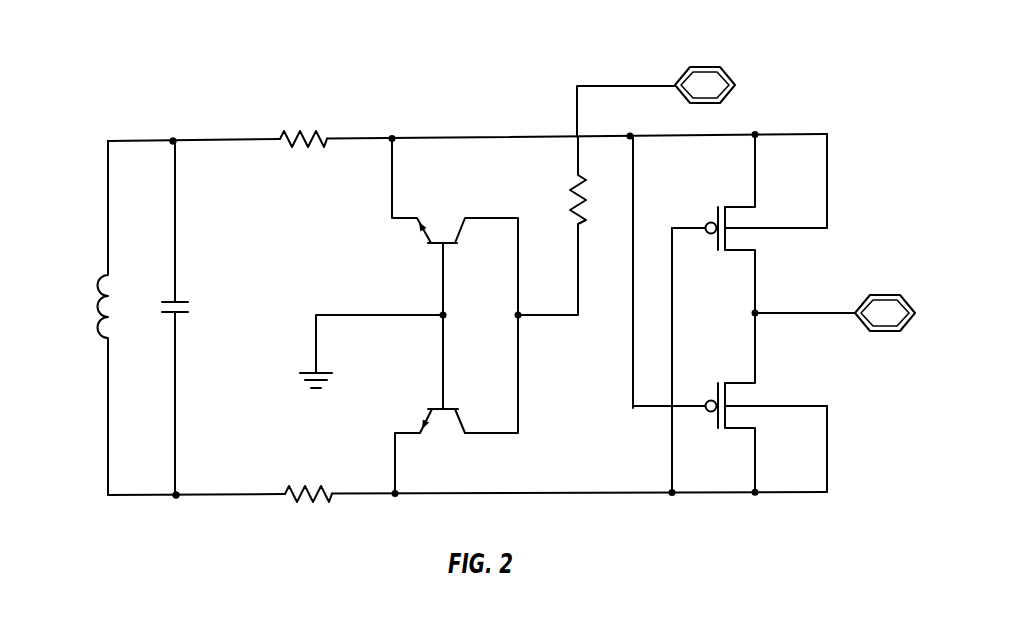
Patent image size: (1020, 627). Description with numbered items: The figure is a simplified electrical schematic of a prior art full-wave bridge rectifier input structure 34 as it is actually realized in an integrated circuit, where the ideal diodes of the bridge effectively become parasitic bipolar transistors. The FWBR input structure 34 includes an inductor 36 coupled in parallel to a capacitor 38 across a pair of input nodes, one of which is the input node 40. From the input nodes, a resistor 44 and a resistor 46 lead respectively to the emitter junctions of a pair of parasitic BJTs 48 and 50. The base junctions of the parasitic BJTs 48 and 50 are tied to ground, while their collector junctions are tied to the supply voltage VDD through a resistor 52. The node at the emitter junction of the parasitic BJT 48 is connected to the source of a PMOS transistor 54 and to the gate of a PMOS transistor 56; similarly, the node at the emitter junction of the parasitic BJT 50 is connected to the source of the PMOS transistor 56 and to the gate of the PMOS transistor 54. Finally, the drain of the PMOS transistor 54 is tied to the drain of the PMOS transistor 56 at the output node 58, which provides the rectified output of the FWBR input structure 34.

The FWBR input structure 34 is at (657, 55).
The inductor 36 is at (104, 277).
The capacitor 38 is at (180, 300).
The input node 40 is at (173, 140).
The resistor 44 is at (318, 138).
The resistor 46 is at (286, 493).
The parasitic BJT 48 is at (438, 240).
The parasitic BJT 50 is at (448, 407).
The resistor 52 is at (570, 195).
The PMOS transistor 54 is at (727, 222).
The PMOS transistor 56 is at (727, 398).
The output node 58 is at (883, 333).